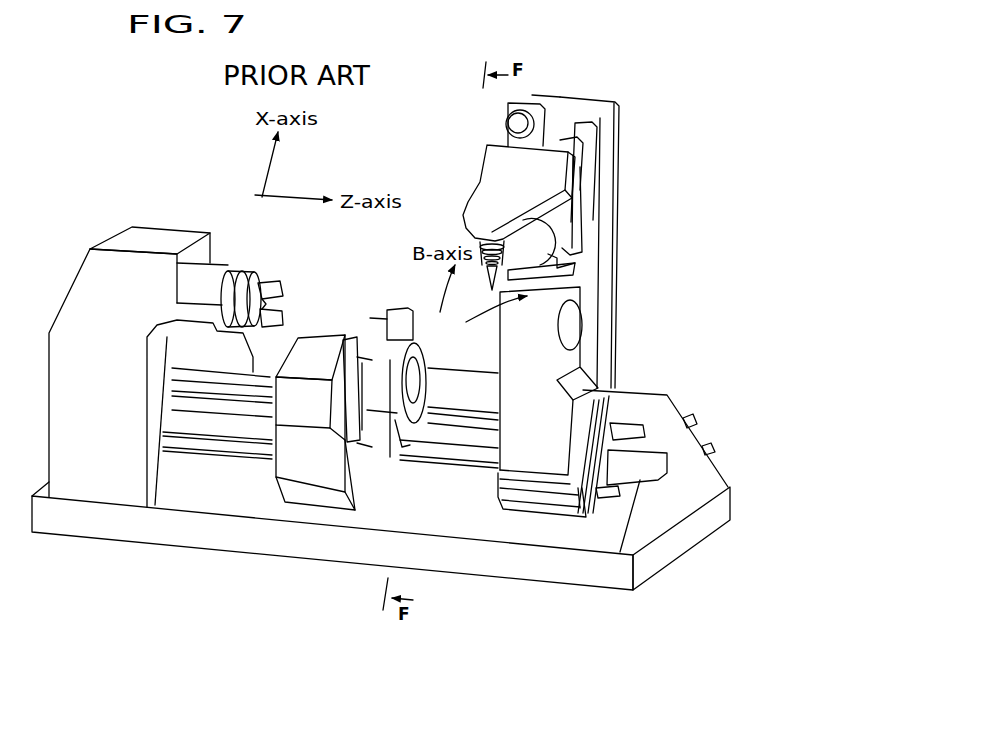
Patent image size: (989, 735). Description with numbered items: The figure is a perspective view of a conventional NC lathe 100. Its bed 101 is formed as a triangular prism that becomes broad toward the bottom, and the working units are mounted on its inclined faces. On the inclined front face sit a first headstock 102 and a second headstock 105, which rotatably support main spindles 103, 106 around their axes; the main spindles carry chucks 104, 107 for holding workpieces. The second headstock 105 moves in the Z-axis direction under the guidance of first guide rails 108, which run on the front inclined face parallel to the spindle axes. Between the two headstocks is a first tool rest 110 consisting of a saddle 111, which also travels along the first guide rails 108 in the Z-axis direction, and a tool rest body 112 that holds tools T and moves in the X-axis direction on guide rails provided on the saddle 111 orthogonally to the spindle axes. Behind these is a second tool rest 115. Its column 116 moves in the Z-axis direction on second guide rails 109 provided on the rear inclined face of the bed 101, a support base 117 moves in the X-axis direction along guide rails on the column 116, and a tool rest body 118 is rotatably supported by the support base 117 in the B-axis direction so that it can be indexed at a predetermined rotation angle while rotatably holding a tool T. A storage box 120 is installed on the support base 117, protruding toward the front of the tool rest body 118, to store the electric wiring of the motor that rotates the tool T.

The NC lathe 100 is at (124, 162).
The bed 101 is at (381, 554).
The first headstock 102 is at (138, 326).
The main spindle 103 is at (241, 270).
The chuck 104 is at (287, 285).
The second headstock 105 is at (586, 471).
The main spindle 106 is at (414, 382).
The chuck 107 is at (499, 370).
The first guide rails 108 is at (609, 456).
The second guide rails 109 is at (710, 408).
The first tool rest 110 is at (322, 489).
The saddle 111 is at (306, 516).
The tool rest body 112 is at (320, 348).
The second tool rest 115 is at (459, 210).
The column 116 is at (614, 241).
The support base 117 is at (638, 188).
The tool rest body 118 is at (612, 249).
The storage box 120 is at (483, 151).
The tool T is at (663, 277).